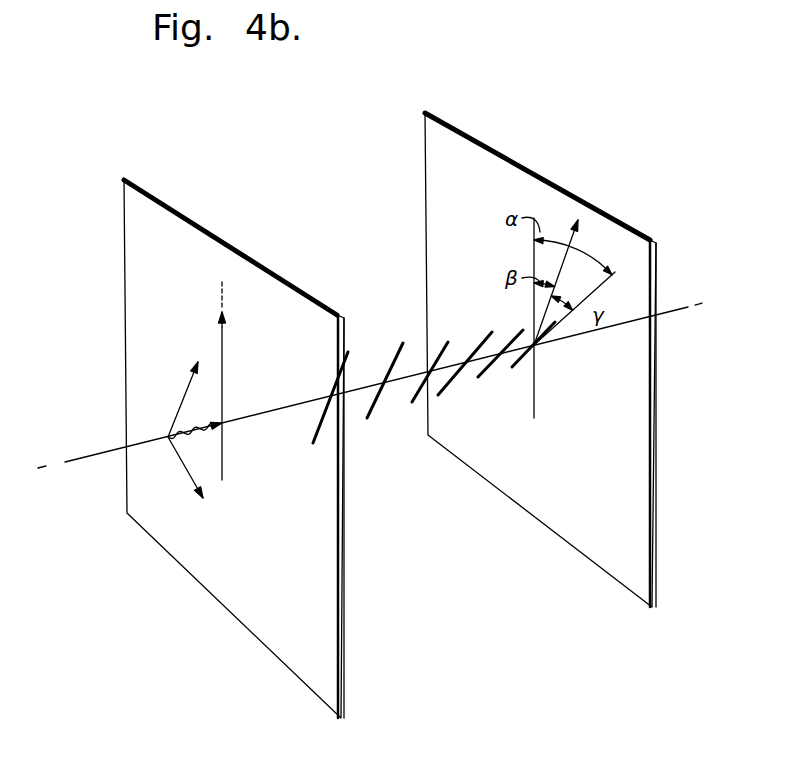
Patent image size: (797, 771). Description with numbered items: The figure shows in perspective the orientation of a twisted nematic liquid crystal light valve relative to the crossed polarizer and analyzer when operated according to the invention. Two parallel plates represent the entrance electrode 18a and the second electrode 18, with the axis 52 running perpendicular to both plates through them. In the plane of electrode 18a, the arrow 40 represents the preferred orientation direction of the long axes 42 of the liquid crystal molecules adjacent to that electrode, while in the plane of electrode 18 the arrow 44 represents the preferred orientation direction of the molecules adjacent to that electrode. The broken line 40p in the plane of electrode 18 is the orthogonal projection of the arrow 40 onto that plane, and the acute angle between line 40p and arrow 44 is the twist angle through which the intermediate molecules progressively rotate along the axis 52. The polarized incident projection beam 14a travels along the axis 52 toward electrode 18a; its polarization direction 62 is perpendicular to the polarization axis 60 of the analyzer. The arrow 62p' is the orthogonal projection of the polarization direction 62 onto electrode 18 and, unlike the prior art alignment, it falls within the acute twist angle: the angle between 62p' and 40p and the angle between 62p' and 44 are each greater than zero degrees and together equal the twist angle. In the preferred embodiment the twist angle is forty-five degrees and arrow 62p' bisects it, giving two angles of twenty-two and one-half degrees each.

The electrode 18a is at (318, 685).
The electrode 18 is at (630, 577).
The axis 52 is at (88, 453).
The long axes of molecules 42 is at (227, 460).
The arrow 40 is at (223, 333).
The polarization direction 62 is at (183, 397).
The polarization axis of the analyzer 60 is at (187, 475).
The projection beam 14a is at (196, 416).
The broken line 40p is at (532, 250).
The arrow 62p' is at (583, 282).
The arrow 44 is at (598, 283).